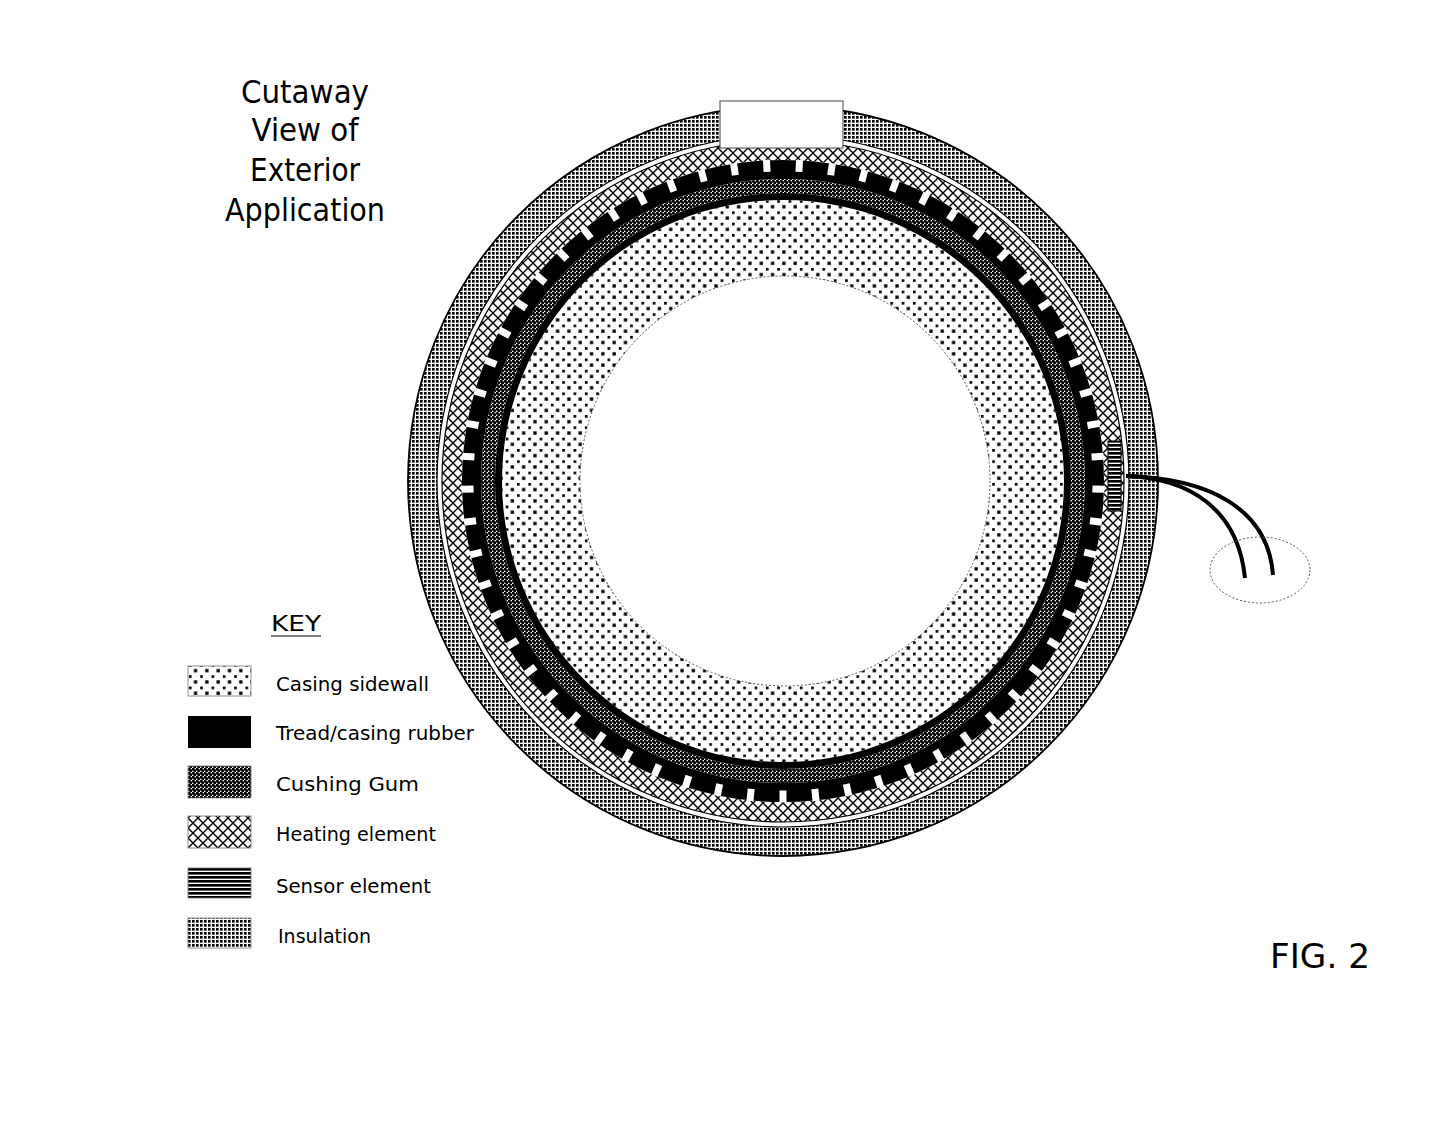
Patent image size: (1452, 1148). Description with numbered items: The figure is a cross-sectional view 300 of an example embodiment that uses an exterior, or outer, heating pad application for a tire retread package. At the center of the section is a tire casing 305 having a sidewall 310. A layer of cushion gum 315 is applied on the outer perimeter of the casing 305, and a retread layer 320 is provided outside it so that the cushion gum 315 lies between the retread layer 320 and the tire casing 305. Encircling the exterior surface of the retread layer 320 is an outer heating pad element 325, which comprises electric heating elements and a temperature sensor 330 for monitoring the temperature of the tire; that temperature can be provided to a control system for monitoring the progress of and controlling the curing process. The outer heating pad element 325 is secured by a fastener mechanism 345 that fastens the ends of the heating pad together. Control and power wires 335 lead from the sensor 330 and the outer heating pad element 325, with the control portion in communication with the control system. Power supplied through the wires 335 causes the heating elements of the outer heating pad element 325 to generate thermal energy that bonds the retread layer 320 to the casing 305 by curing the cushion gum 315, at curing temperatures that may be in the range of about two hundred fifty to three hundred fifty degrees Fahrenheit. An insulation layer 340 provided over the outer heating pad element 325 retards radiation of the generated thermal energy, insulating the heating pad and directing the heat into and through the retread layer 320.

The cross-sectional view 300 is at (492, 99).
The tire casing 305 is at (1010, 393).
The sidewall 310 is at (983, 585).
The cushion gum 315 is at (927, 710).
The retread layer 320 is at (887, 205).
The outer heating pad element 325 is at (970, 775).
The temperature sensor 330 is at (1123, 432).
The control and power wires 335 is at (1302, 562).
The insulation layer 340 is at (1038, 200).
The fastener mechanism 345 is at (773, 92).